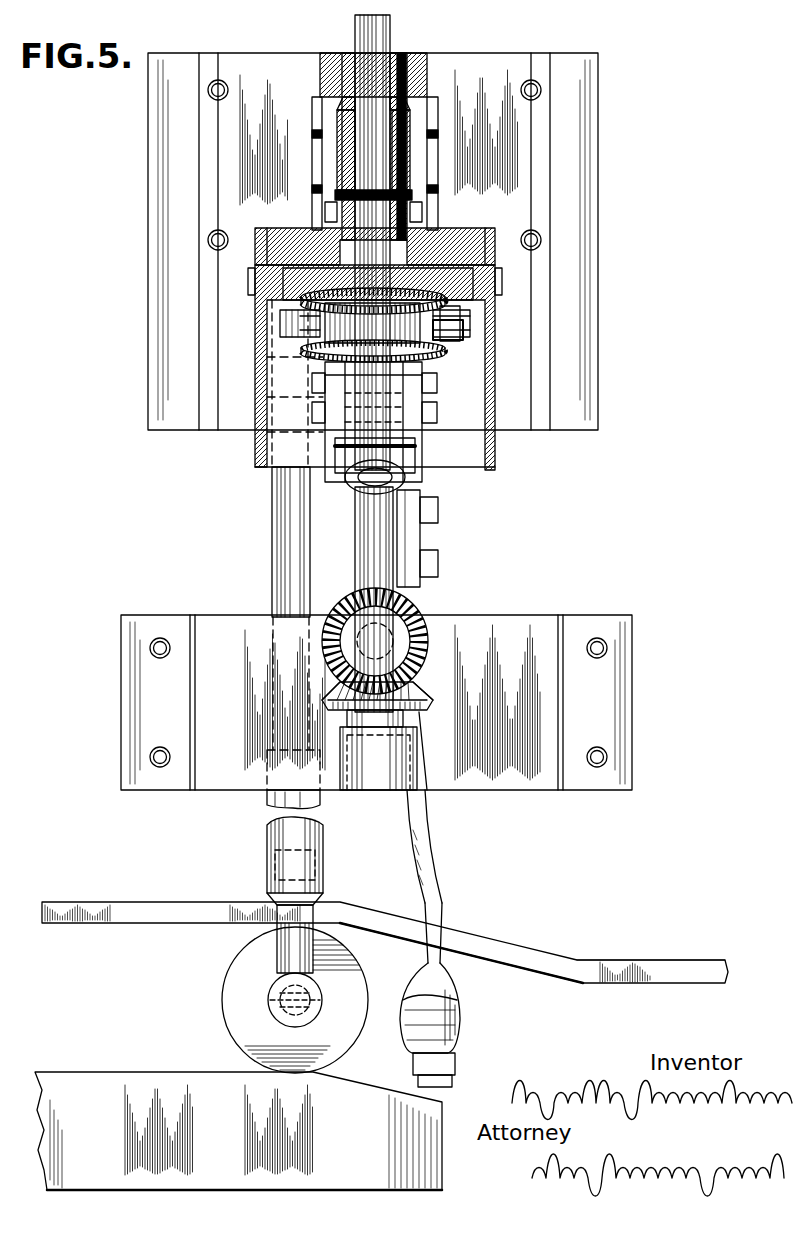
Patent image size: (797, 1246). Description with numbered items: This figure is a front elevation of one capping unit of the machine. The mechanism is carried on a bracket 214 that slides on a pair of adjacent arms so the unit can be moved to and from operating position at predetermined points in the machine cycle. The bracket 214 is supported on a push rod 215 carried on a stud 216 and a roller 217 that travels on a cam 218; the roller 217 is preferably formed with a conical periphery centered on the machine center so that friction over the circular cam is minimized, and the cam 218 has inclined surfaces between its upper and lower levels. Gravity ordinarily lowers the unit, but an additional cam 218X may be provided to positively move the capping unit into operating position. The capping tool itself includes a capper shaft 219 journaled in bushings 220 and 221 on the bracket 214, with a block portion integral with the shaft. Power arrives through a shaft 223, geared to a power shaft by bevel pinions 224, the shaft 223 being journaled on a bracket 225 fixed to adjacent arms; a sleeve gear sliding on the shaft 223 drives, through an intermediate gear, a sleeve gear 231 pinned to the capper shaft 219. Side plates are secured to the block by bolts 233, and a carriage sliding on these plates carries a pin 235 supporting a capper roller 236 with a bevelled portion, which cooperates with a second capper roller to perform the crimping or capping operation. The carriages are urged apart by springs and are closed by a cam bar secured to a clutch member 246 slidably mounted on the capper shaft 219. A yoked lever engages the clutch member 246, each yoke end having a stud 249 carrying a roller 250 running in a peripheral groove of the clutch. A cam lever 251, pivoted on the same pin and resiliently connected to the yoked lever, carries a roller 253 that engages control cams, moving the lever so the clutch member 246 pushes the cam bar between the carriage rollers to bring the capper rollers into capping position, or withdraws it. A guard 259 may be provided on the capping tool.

The bracket 214 is at (510, 63).
The push rod 215 is at (275, 545).
The stud 216 is at (310, 1017).
The roller 217 is at (232, 998).
The cam 218 is at (118, 1057).
The additional cam 218X is at (497, 948).
The shaft 219 is at (365, 155).
The bushing 220 is at (410, 68).
The bushing 221 is at (420, 245).
The shaft 223 is at (392, 30).
The bevel pinions 224 is at (425, 683).
The bracket 225 is at (520, 783).
The sleeve gear 231 is at (407, 160).
The bolts 233 is at (440, 412).
The pin 235 is at (397, 477).
The roller 236 is at (408, 470).
The clutch member 246 is at (318, 340).
The stud 249 is at (430, 320).
The roller 250 is at (443, 340).
The cam lever 251 is at (443, 887).
The roller 253 is at (458, 1015).
The guard 259 is at (497, 458).